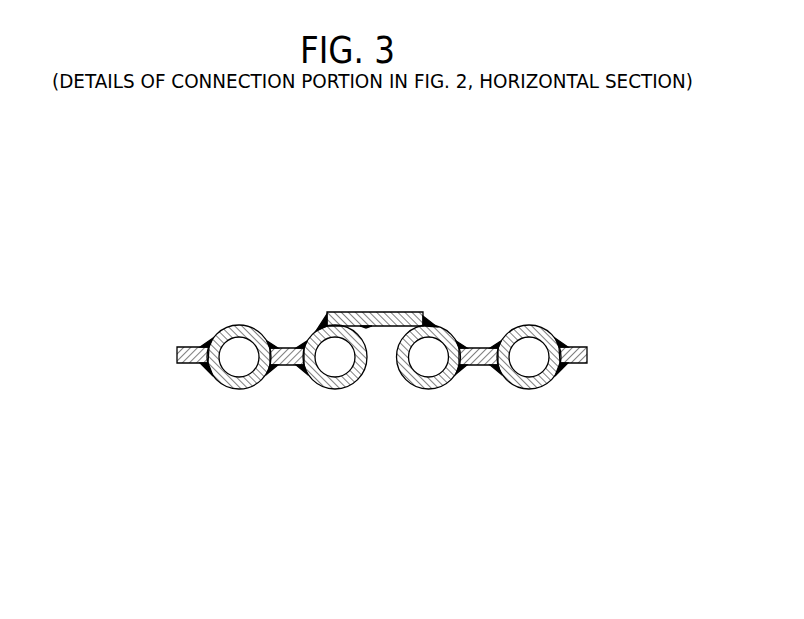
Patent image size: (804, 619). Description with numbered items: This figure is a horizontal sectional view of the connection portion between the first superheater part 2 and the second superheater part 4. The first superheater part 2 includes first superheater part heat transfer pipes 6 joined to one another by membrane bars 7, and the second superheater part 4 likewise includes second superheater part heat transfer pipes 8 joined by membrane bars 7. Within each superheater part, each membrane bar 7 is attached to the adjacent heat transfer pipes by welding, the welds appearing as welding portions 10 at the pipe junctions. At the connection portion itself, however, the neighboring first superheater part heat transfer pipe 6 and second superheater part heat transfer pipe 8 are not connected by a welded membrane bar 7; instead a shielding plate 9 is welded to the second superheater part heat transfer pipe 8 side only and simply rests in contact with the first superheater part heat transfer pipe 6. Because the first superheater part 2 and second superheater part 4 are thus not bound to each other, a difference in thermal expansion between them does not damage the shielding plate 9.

The first superheater part 2 is at (565, 442).
The second superheater part 4 is at (347, 445).
The first superheater part heat transfer pipe 6 is at (522, 327).
The membrane bar 7 is at (495, 407).
The second superheater part heat transfer pipe 8 is at (260, 290).
The shielding plate 9 is at (362, 312).
The welding portion 10 is at (206, 366).